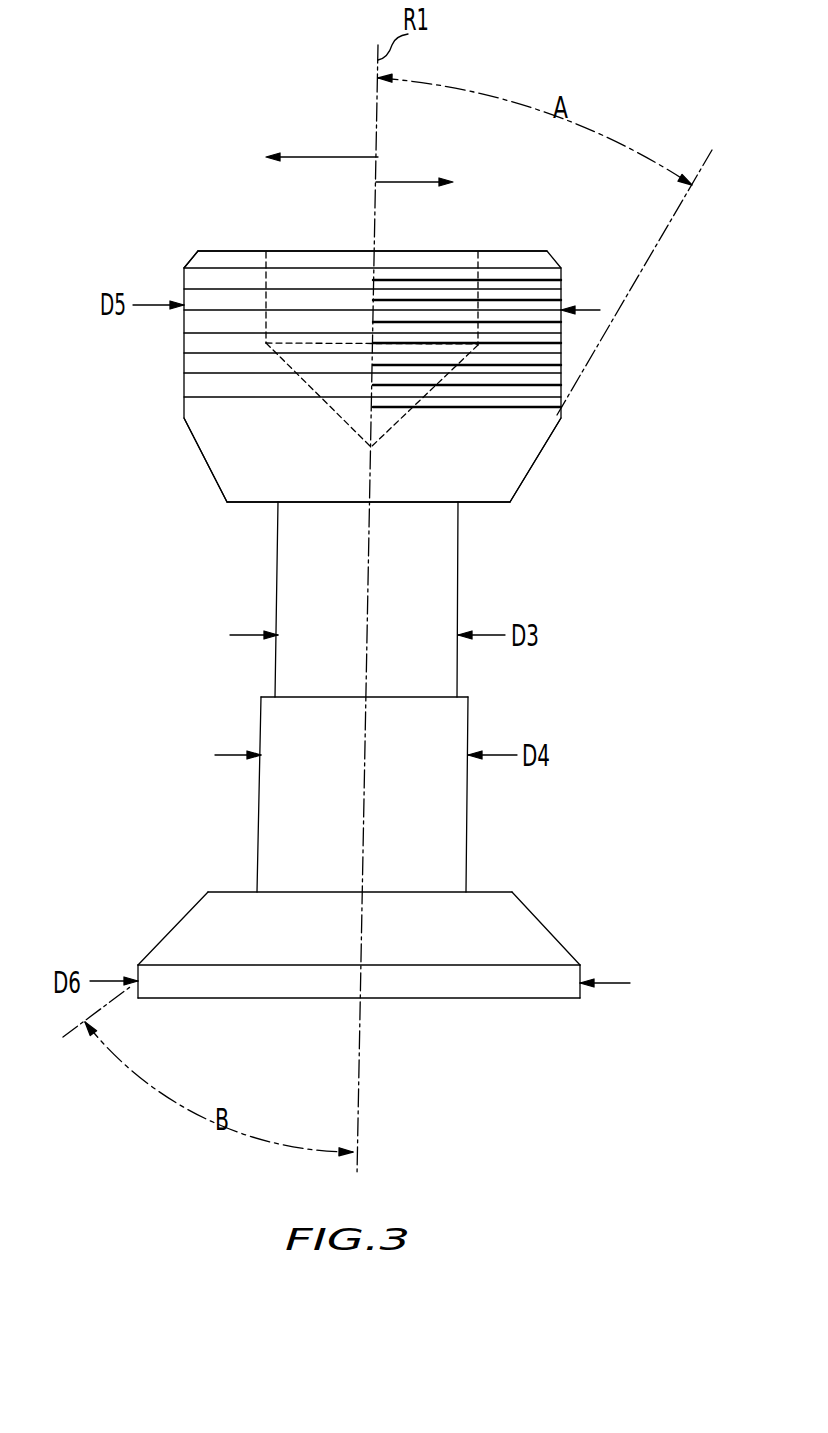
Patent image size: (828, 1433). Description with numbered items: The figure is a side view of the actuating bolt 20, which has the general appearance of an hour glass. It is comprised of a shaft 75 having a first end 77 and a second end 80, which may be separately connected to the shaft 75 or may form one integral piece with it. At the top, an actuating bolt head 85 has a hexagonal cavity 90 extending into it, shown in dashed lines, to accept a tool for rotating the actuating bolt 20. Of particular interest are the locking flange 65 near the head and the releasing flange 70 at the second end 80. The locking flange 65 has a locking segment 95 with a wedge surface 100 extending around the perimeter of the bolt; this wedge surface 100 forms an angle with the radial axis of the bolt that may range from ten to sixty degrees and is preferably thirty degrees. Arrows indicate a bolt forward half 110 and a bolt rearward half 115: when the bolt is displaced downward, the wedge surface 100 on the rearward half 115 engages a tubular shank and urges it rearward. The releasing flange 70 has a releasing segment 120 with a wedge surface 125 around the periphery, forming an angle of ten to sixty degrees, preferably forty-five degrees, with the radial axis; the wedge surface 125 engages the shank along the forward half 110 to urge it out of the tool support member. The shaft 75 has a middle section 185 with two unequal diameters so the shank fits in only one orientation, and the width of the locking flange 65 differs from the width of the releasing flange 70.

The actuating bolt 20 is at (97, 255).
The locking flange 65 is at (187, 342).
The releasing flange 70 is at (188, 922).
The shaft 75 is at (280, 565).
The first end 77 is at (222, 250).
The second end 80 is at (485, 1000).
The actuating bolt head 85 is at (242, 250).
The hexagonal cavity 90 is at (357, 287).
The locking segment 95 is at (217, 443).
The wedge surface 100 is at (207, 478).
The bolt forward half 110 is at (400, 182).
The bolt rearward half 115 is at (312, 157).
The releasing segment 120 is at (560, 940).
The wedge surface 125 is at (530, 910).
The middle section 185 is at (488, 604).